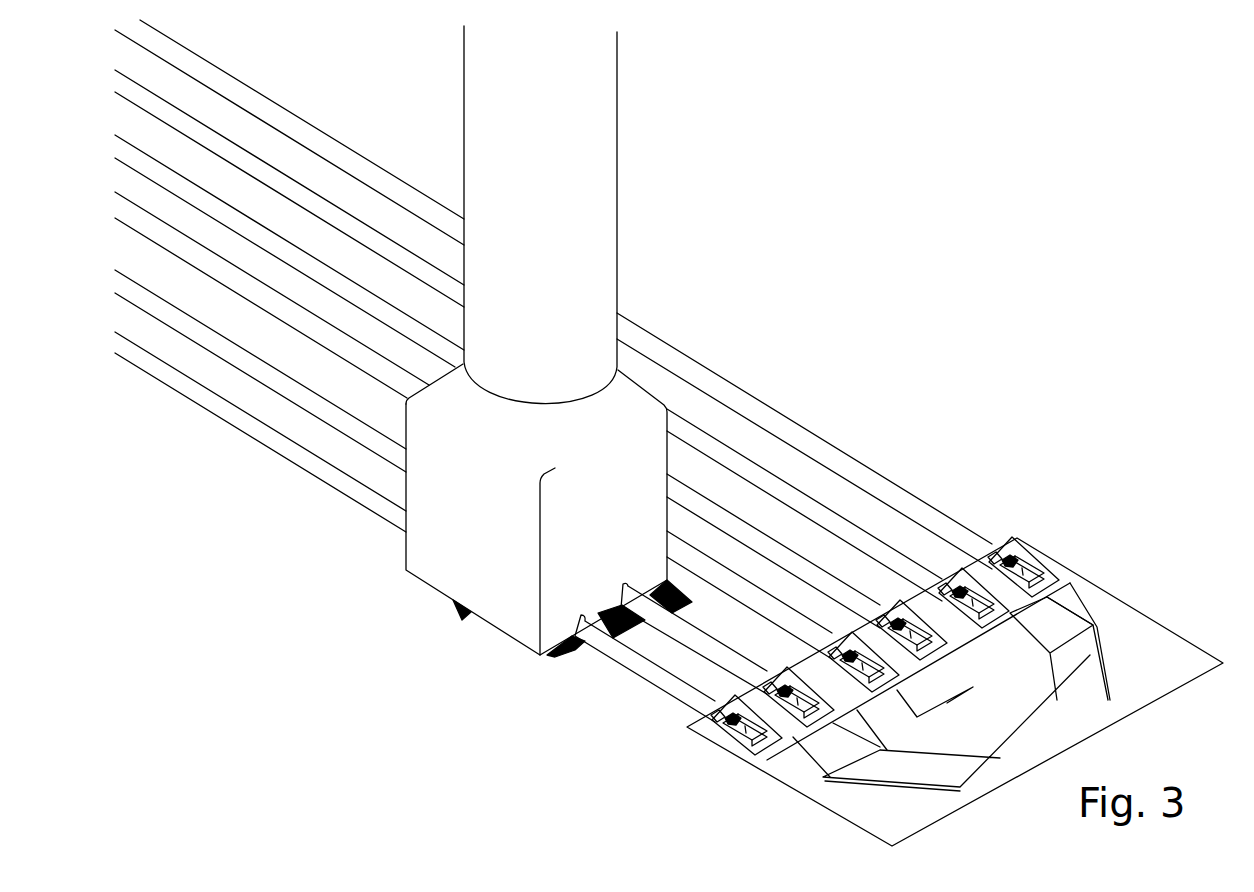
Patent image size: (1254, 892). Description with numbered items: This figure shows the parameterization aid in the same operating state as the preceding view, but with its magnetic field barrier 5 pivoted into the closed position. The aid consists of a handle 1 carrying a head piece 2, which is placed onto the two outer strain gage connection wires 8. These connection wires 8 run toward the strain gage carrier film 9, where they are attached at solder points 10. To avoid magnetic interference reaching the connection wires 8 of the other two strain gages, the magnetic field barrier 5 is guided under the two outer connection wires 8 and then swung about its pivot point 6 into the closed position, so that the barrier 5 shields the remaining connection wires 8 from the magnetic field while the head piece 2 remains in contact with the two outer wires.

The handle 1 is at (593, 154).
The head piece 2 is at (603, 450).
The magnetic field barrier 5 is at (571, 650).
The pivot point 6 is at (453, 613).
The strain gage connection wires 8 is at (205, 338).
The strain gage carrier film 9 is at (1135, 623).
The solder points 10 is at (1012, 560).